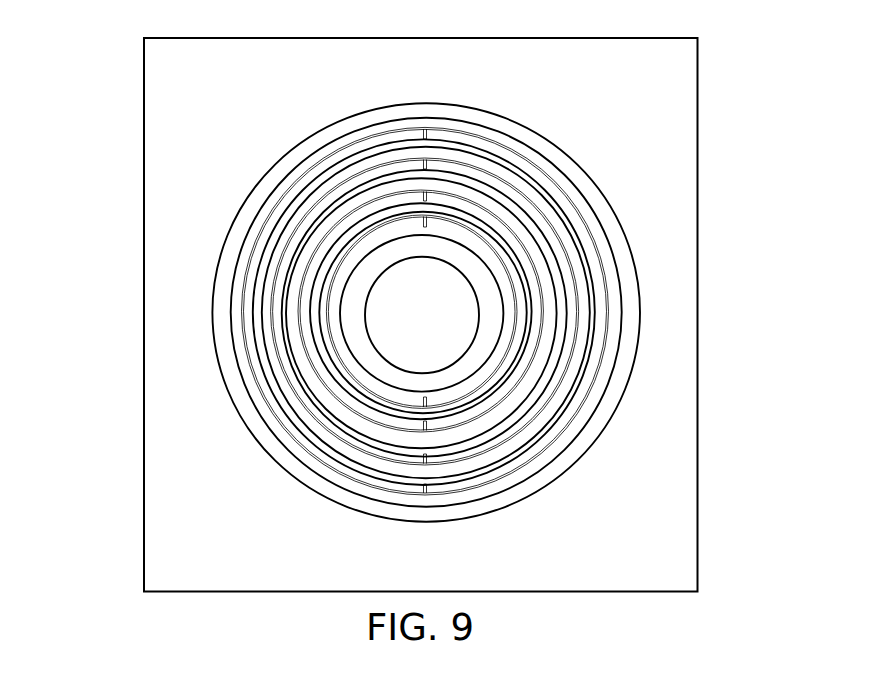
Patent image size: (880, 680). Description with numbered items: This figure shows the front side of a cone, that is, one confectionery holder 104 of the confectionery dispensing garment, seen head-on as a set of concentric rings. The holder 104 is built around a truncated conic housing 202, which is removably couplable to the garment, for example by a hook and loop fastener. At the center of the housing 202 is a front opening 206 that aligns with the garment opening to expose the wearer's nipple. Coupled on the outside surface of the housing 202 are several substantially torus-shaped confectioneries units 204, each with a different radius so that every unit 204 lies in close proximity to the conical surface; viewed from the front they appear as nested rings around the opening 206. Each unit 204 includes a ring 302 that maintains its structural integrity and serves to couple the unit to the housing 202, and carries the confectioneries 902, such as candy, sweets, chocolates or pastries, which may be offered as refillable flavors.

The confectionery holder 104 is at (661, 112).
The truncated conic housing 202 is at (222, 332).
The confectioneries unit 204 is at (621, 320).
The front opening 206 is at (405, 315).
The ring 302 is at (602, 263).
The confectioneries 902 is at (615, 297).